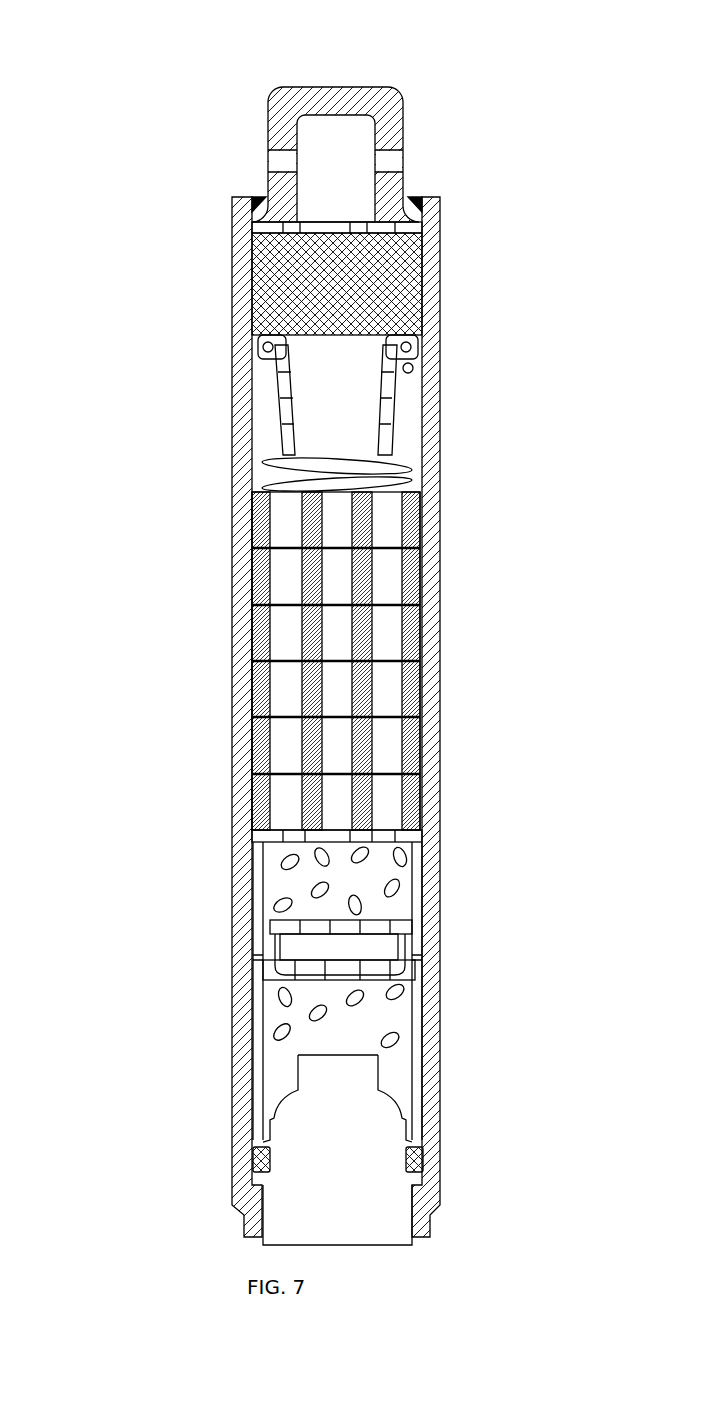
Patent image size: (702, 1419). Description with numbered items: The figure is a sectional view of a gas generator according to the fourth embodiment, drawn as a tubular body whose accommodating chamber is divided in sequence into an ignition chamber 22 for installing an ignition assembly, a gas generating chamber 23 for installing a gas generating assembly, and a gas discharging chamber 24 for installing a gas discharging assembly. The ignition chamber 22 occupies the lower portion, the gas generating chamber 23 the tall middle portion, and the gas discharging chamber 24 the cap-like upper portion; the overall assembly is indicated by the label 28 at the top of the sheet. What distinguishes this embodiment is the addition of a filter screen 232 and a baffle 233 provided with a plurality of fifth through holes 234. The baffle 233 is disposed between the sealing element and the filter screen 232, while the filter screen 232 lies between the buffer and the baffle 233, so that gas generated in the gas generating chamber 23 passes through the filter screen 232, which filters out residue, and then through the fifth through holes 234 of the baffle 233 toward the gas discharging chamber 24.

The cartridge assembly 28 is at (332, 33).
The gas discharging chamber 24 is at (437, 83).
The gas generating chamber 23 is at (440, 222).
The ignition chamber 22 is at (440, 835).
The filter screen 232 is at (297, 313).
The baffle 233 is at (255, 232).
The fifth through holes 234 is at (370, 230).